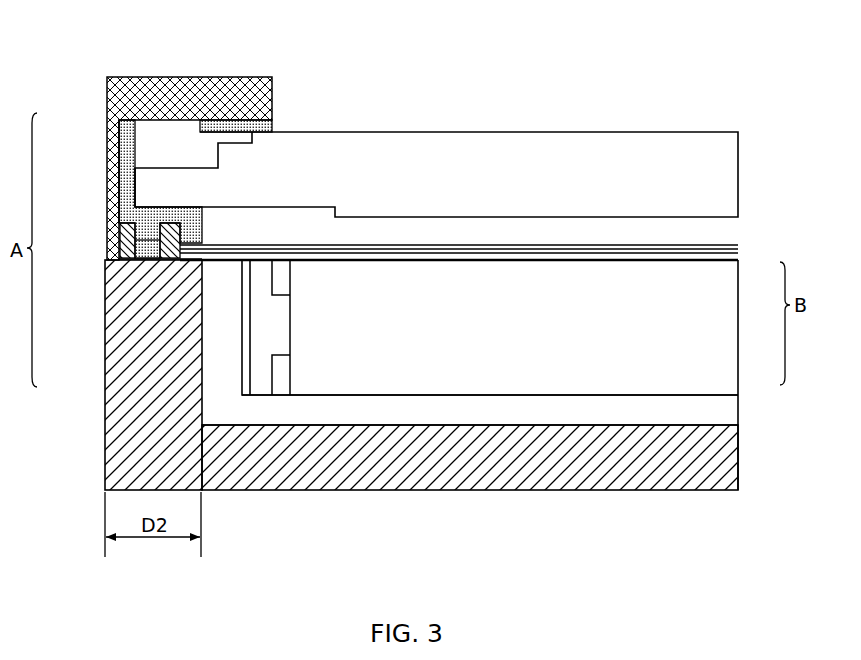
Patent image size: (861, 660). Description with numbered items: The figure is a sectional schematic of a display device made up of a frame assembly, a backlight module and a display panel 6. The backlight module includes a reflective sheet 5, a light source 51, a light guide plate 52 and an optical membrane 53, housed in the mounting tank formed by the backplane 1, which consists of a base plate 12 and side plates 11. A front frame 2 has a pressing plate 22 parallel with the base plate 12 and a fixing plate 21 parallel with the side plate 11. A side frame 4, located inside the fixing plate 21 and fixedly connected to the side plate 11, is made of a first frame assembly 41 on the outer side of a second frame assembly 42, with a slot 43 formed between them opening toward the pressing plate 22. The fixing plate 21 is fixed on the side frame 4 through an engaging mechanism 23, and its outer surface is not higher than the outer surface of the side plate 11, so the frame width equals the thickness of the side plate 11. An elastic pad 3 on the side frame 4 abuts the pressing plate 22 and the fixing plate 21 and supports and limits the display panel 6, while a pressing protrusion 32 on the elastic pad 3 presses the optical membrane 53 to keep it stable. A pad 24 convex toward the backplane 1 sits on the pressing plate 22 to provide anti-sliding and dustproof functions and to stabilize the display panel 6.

The backplane 1 is at (60, 363).
The front frame 2 is at (68, 95).
The elastic pad 3 is at (116, 184).
The side frame 4 is at (68, 190).
The reflective sheet 5 is at (738, 415).
The display panel 6 is at (738, 180).
The side plate 11 is at (125, 345).
The base plate 12 is at (303, 453).
The fixing plate 21 is at (124, 170).
The pressing plate 22 is at (200, 83).
The engaging mechanism 23 is at (118, 252).
The pad 24 is at (273, 130).
The pressing protrusion 32 is at (202, 233).
The first frame assembly 41 is at (130, 230).
The second frame assembly 42 is at (120, 233).
The slot 43 is at (133, 266).
The light source 51 is at (290, 325).
The light guide plate 52 is at (738, 333).
The optical membrane 53 is at (738, 262).